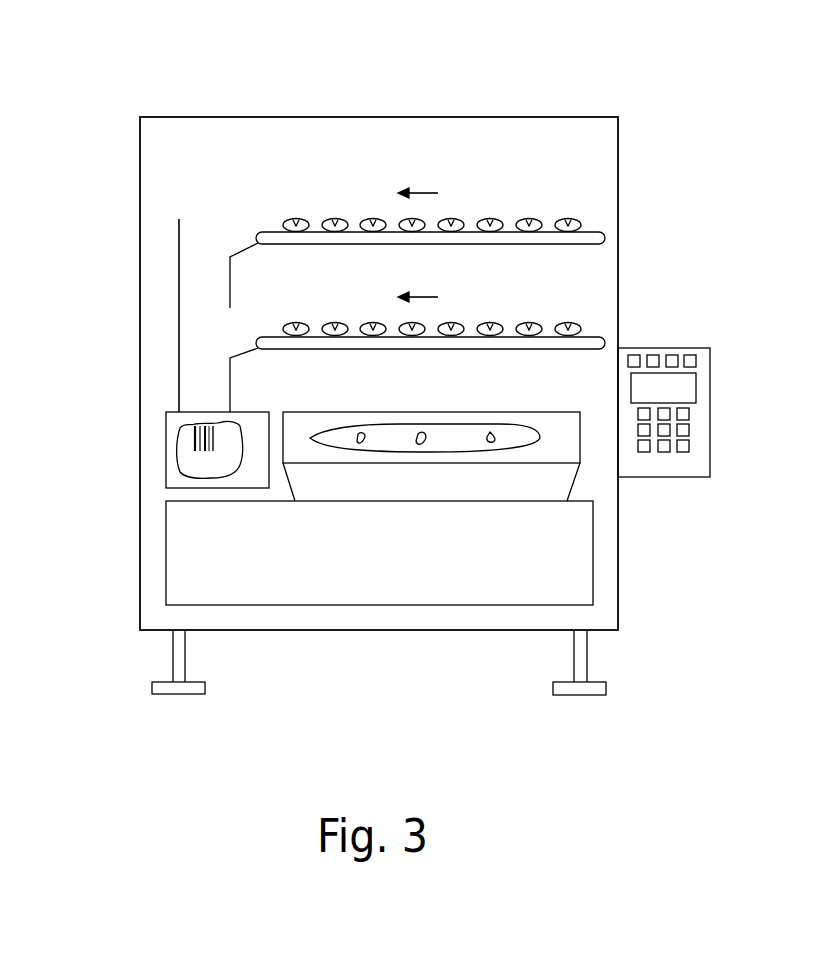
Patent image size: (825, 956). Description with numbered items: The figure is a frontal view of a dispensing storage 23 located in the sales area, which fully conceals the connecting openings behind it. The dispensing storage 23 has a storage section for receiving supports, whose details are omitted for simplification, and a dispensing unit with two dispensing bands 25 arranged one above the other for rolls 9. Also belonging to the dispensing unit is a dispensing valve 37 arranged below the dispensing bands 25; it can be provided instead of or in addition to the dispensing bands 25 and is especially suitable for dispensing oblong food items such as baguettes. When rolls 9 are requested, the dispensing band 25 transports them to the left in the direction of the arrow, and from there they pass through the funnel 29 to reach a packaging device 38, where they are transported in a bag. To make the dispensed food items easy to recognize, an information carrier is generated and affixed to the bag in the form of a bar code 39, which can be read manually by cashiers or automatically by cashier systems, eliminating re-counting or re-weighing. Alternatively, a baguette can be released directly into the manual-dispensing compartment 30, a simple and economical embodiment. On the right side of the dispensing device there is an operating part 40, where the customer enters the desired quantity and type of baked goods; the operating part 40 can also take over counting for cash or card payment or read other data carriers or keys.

The dispensing storage 23 is at (380, 117).
The dispensing band 25 is at (583, 238).
The funnel 29 is at (252, 250).
The roll 9 is at (530, 327).
The dispensing valve 37 is at (575, 435).
The packaging device 38 is at (178, 477).
The bar code 39 is at (192, 437).
The manual-dispensing compartment 30 is at (580, 542).
The operating part 40 is at (696, 425).